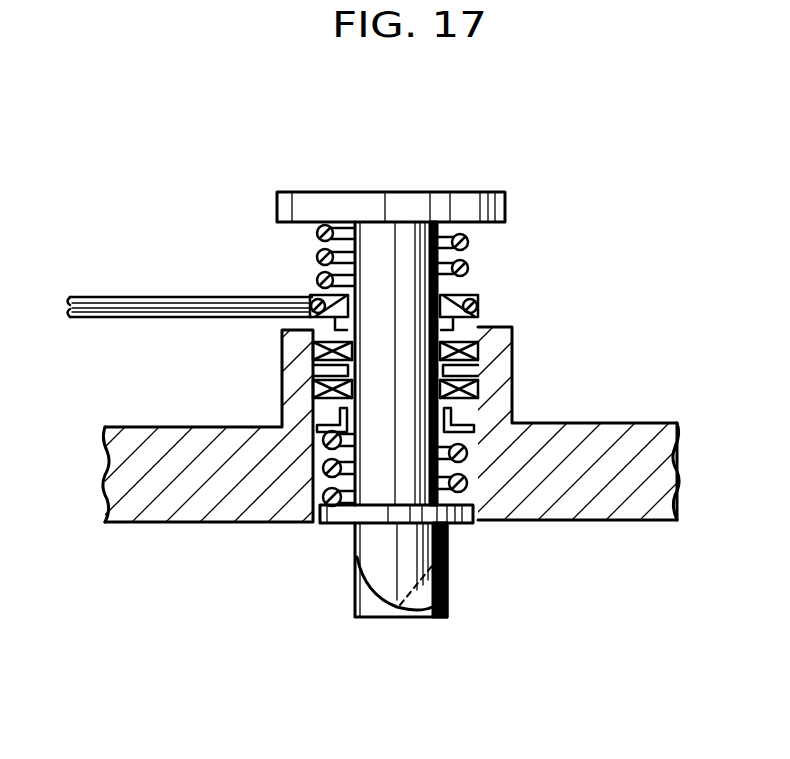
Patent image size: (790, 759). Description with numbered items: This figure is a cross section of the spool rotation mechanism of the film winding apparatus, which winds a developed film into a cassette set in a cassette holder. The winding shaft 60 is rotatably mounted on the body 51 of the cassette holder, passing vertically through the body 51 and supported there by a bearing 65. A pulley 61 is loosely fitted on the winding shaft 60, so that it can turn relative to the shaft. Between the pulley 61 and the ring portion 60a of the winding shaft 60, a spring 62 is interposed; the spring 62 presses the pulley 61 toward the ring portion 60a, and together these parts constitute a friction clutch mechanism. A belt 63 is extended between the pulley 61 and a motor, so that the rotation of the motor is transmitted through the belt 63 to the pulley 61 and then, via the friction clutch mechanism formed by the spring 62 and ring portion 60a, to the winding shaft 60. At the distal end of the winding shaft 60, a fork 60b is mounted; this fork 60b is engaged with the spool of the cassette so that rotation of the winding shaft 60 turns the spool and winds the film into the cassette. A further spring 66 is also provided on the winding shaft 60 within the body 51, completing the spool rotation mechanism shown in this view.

The body 51 is at (200, 512).
The winding shaft 60 is at (381, 255).
The ring portion 60a is at (475, 200).
The fork 60b is at (375, 606).
The pulley 61 is at (313, 299).
The spring 62 is at (468, 241).
The belt 63 is at (131, 300).
The bearing 65 is at (472, 350).
The spring 66 is at (470, 484).